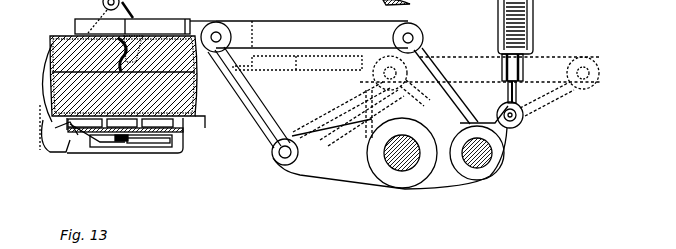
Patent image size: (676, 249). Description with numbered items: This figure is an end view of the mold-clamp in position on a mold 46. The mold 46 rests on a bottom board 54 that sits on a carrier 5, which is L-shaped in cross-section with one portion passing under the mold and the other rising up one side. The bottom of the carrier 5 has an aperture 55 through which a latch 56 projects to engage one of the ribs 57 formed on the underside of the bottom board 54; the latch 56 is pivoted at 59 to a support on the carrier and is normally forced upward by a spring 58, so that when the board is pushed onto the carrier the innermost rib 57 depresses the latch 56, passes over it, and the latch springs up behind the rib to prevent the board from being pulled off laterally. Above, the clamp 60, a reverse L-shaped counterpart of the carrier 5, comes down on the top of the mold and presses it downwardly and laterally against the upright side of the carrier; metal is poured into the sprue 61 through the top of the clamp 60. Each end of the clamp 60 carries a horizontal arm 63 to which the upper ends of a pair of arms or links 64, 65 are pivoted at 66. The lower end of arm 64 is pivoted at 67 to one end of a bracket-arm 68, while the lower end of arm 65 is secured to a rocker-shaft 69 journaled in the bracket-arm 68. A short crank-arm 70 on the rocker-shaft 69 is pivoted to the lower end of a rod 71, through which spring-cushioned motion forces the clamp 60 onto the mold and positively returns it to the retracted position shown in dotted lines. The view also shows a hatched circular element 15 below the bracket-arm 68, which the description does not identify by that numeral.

The mold 46 is at (57, 42).
The sprue 61 is at (130, 46).
The clamp 60 is at (140, 34).
The pivot 66 is at (220, 36).
The horizontal arm 63 is at (307, 29).
The arm or link 64 is at (249, 100).
The arm or link 65 is at (444, 100).
The pivot 67 is at (284, 160).
The bracket-arm 68 is at (335, 172).
The wheel 15 is at (403, 172).
The rocker-shaft 69 is at (470, 163).
The crank-arm 70 is at (512, 134).
The rod 71 is at (519, 97).
The carrier 5 is at (182, 132).
The bottom board 54 is at (192, 118).
The aperture 55 is at (82, 130).
The latch 56 is at (63, 133).
The rib 57 is at (58, 128).
The spring 58 is at (147, 145).
The pivot 59 is at (118, 141).